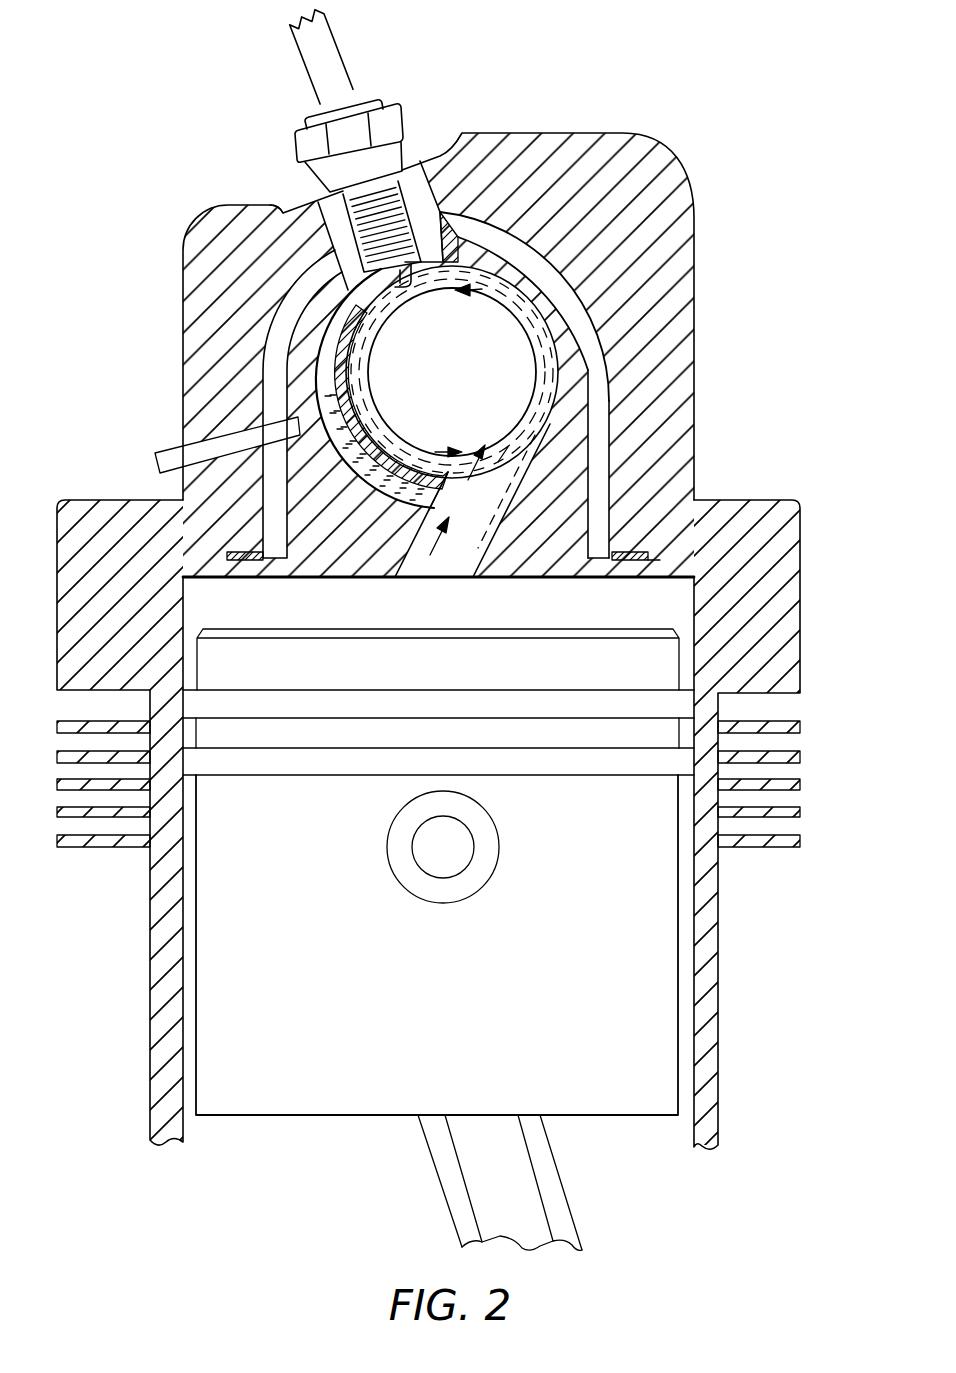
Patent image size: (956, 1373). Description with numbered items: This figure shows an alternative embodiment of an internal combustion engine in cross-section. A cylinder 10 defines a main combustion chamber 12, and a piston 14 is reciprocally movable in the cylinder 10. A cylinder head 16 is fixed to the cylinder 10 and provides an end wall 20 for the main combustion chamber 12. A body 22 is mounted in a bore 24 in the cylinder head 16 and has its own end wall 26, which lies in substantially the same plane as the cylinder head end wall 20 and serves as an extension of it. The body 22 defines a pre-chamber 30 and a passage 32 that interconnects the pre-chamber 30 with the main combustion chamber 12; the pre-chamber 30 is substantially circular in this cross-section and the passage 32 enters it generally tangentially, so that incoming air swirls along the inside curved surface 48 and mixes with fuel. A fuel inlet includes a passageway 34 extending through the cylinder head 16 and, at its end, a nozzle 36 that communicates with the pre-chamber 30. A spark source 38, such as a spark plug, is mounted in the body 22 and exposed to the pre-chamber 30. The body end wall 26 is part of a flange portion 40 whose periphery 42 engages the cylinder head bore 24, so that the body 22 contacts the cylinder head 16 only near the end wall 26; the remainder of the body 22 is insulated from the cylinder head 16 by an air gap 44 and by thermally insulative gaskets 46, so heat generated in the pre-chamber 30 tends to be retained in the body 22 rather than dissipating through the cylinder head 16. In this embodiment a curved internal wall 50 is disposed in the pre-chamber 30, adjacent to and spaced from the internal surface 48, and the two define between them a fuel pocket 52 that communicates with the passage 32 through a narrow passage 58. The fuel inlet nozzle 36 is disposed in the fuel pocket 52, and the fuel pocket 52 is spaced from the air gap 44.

The cylinder 10 is at (150, 951).
The main combustion chamber 12 is at (185, 606).
The piston 14 is at (668, 944).
The cylinder head 16 is at (183, 237).
The end wall 20 is at (218, 580).
The body 22 is at (588, 418).
The bore 24 is at (600, 387).
The end wall 26 is at (520, 580).
The pre-chamber 30 is at (520, 305).
The passage 32 is at (396, 580).
The passageway 34 is at (200, 443).
The nozzle 36 is at (300, 417).
The spark source 38 is at (343, 83).
The flange portion 40 is at (600, 578).
The periphery 42 is at (660, 568).
The air gap 44 is at (290, 210).
The gaskets 46 is at (228, 550).
The inside curved surface 48 is at (547, 347).
The curved internal wall 50 is at (373, 368).
The fuel pocket 52 is at (323, 368).
The narrow passage 58 is at (420, 514).